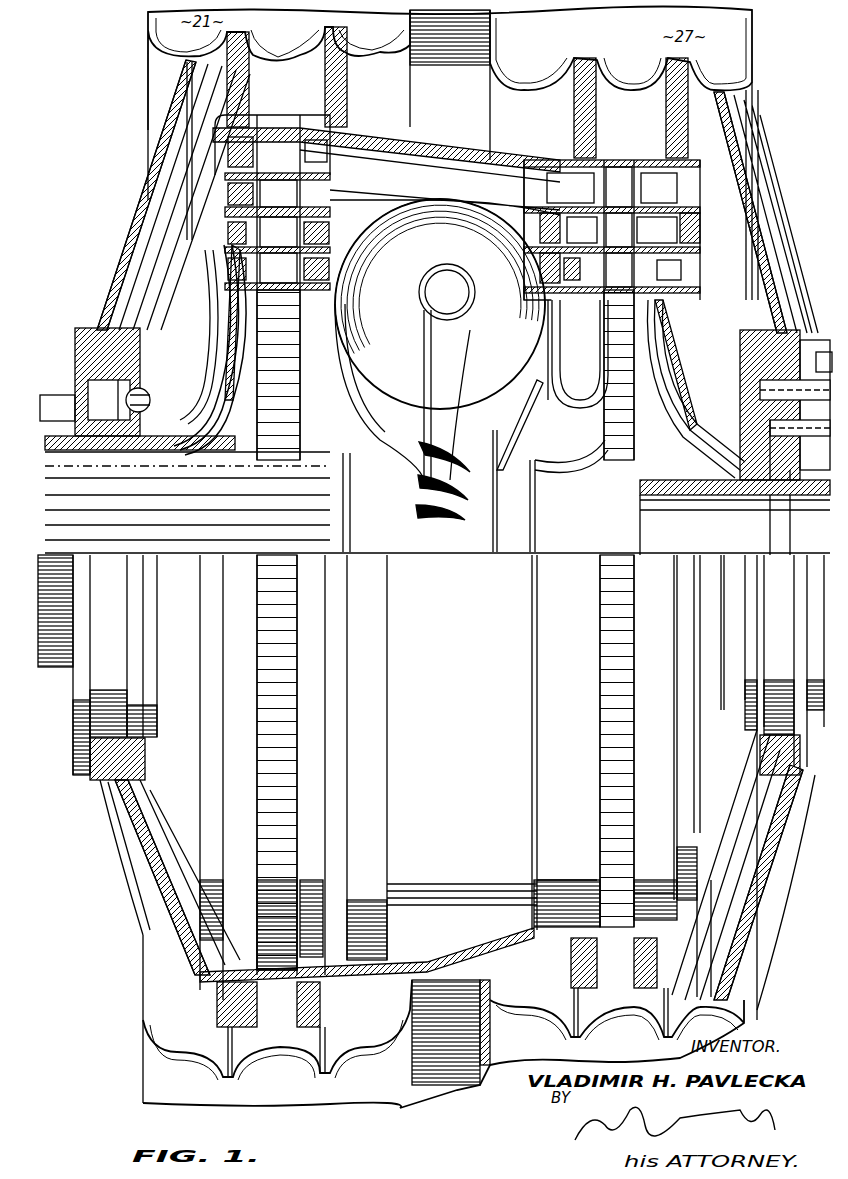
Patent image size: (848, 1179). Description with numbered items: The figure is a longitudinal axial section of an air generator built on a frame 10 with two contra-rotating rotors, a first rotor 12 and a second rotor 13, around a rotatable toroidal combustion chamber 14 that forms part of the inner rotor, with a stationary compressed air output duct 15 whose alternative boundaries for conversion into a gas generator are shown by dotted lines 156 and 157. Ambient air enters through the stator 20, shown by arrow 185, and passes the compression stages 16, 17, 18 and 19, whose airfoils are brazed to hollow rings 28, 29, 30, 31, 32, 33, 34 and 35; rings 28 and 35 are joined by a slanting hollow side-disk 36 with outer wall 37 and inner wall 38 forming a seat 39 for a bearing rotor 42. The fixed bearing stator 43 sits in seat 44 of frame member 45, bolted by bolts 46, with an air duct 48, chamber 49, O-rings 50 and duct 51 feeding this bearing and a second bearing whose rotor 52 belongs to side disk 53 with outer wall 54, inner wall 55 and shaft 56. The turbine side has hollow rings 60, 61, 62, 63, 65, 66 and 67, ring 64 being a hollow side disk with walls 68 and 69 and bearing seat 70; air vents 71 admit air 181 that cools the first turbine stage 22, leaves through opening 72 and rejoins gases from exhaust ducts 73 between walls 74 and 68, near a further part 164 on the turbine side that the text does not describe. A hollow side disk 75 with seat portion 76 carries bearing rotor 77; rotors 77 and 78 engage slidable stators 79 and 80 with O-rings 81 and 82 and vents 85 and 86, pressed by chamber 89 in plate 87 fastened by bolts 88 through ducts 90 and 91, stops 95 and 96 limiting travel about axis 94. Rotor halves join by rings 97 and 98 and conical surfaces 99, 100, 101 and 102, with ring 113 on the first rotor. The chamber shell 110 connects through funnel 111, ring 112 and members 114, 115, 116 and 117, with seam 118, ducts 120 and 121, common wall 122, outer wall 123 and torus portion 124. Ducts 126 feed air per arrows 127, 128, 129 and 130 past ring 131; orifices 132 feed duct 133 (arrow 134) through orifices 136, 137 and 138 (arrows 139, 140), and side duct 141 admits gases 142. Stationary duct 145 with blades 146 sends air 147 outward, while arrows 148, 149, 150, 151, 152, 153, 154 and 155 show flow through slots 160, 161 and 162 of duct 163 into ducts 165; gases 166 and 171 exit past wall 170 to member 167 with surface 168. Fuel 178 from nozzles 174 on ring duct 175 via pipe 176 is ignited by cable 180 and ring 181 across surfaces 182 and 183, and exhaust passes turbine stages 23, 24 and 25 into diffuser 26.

The frame 10 is at (130, 31).
The first rotor 12 is at (205, 156).
The second rotor 13 is at (230, 195).
The toroidal combustion chamber 14 is at (409, 297).
The stationary compressed air output duct 15 is at (124, 538).
The first compression stage 16 is at (288, 150).
The second compression stage 17 is at (278, 193).
The third compression stage 18 is at (278, 232).
The fourth compression stage 19 is at (278, 268).
The compressor stator 20 is at (288, 85).
The first turbine stage 22 is at (570, 325).
The second turbine stage 23 is at (619, 270).
The third turbine stage 24 is at (619, 230).
The fourth turbine stage 25 is at (619, 187).
The stationary diffuser stage 26 is at (630, 125).
The hollow ring 28 is at (222, 132).
The hollow ring 29 is at (315, 100).
The hollow ring 30 is at (240, 190).
The hollow ring 31 is at (320, 195).
The hollow ring 32 is at (390, 270).
The hollow ring 33 is at (330, 285).
The hollow ring 34 is at (220, 255).
The hollow ring 35 is at (235, 230).
The hollow side-disk 36 is at (195, 285).
The outer side wall 37 is at (180, 270).
The inner side wall 38 is at (190, 360).
The seat 39 is at (205, 335).
The bearing rotor 42 is at (160, 390).
The bearing stator 43 is at (100, 385).
The seat 44 is at (132, 440).
The frame member 45 is at (62, 325).
The bolts 46 is at (68, 342).
The air duct 48 is at (100, 365).
The chamber 49 is at (75, 410).
The O-rings 50 is at (75, 348).
The air duct 51 is at (100, 430).
The bearing rotor 52 is at (170, 440).
The hollow side disk 53 is at (190, 320).
The outer wall 54 is at (298, 393).
The inner wall 55 is at (210, 415).
The shaft 56 is at (65, 445).
The hollow ring 60 is at (560, 170).
The hollow ring 61 is at (582, 230).
The hollow ring 62 is at (545, 268).
The hollow ring 63 is at (560, 340).
The hollow side disk 64 is at (649, 342).
The hollow ring 65 is at (669, 270).
The hollow ring 66 is at (657, 230).
The hollow ring 67 is at (659, 188).
The side wall 68 is at (600, 365).
The side wall 69 is at (730, 285).
The bearing seat 70 is at (725, 495).
The air vents 71 is at (672, 495).
The opening 72 is at (575, 405).
The exhaust ducts 73 is at (519, 460).
The side wall 74 is at (516, 402).
The hollow turbine side disk 75 is at (700, 275).
The air bearing seat portion 76 is at (740, 380).
The bearing rotor 77 is at (780, 330).
The bearing rotor 78 is at (748, 495).
The bearing stator 79 is at (800, 335).
The bearing stator 80 is at (674, 530).
The O-ring 81 is at (755, 560).
The O-ring 82 is at (762, 495).
The air vents 85 is at (795, 350).
The air vents 86 is at (705, 495).
The air bearing plate 87 is at (820, 297).
The bolts 88 is at (821, 307).
The compressed air chamber 89 is at (810, 560).
The duct 90 is at (822, 350).
The duct 91 is at (795, 555).
The axis of rotation 94 is at (510, 555).
The stop 95 is at (660, 400).
The stop 96 is at (775, 495).
The ring 97 is at (375, 140).
The ring 98 is at (510, 180).
The conical surface 99 is at (345, 150).
The conical surface 100 is at (312, 165).
The conical surface 101 is at (500, 180).
The conical surface 102 is at (490, 120).
The outer wall 110 is at (470, 175).
The input funnel-shaped member 111 is at (396, 380).
The ring-shaped member 112 is at (435, 175).
The ring 113 is at (420, 175).
The connecting member 114 is at (432, 257).
The connecting member 115 is at (455, 235).
The connecting member 116 is at (500, 240).
The connecting member 117 is at (470, 275).
The seam 118 is at (500, 285).
The exhaust duct 120 is at (522, 522).
The exhaust duct 121 is at (557, 458).
The common wall 122 is at (515, 480).
The outer wall 123 is at (560, 400).
The portion of the torus 124 is at (522, 353).
The ducts 126 is at (250, 472).
The arrow 127 is at (425, 275).
The arrow 128 is at (490, 300).
The arrow 129 is at (400, 395).
The arrow 130 is at (385, 440).
The flow-directing semicircular ring 131 is at (420, 285).
The orifices 132 is at (345, 410).
The duct 133 is at (330, 298).
The arrow 134 is at (360, 330).
The orifice 136 is at (360, 245).
The orifice 137 is at (470, 220).
The orifice 138 is at (570, 188).
The arrow 139 is at (394, 198).
The arrow 140 is at (495, 316).
The side duct 141 is at (372, 345).
The arrow 142 is at (395, 338).
The stationary duct 145 is at (195, 555).
The flow directing blades 146 is at (232, 555).
The arrow 147 is at (150, 524).
The arrow 148 is at (360, 505).
The arrow 149 is at (360, 555).
The arrow 150 is at (475, 420).
The arrow 151 is at (582, 546).
The arrow 152 is at (600, 510).
The arrow 153 is at (425, 470).
The arrow 154 is at (428, 500).
The arrow 155 is at (410, 555).
The dotted line 156 is at (215, 585).
The dotted line 157 is at (194, 418).
The slot 160 is at (445, 555).
The slot 161 is at (449, 515).
The slot 162 is at (420, 445).
The duct 163 is at (384, 538).
The shaft section 164 is at (564, 573).
The combustion chamber branch ducts 165 is at (496, 370).
The arrow 166 is at (560, 437).
The stationary member 167 is at (665, 555).
The curved conical surface 168 is at (615, 530).
The wall 170 is at (500, 405).
The arrow 171 is at (483, 425).
The fuel nozzles 174 is at (330, 500).
The ring-shaped fuel duct 175 is at (330, 515).
The fuel pipe 176 is at (220, 460).
The fuel 178 is at (275, 450).
The ignition cable 180 is at (312, 568).
The ring 181 is at (605, 350).
The side surface 182 is at (290, 452).
The side surface 183 is at (330, 490).
The arrow 185 is at (282, 150).